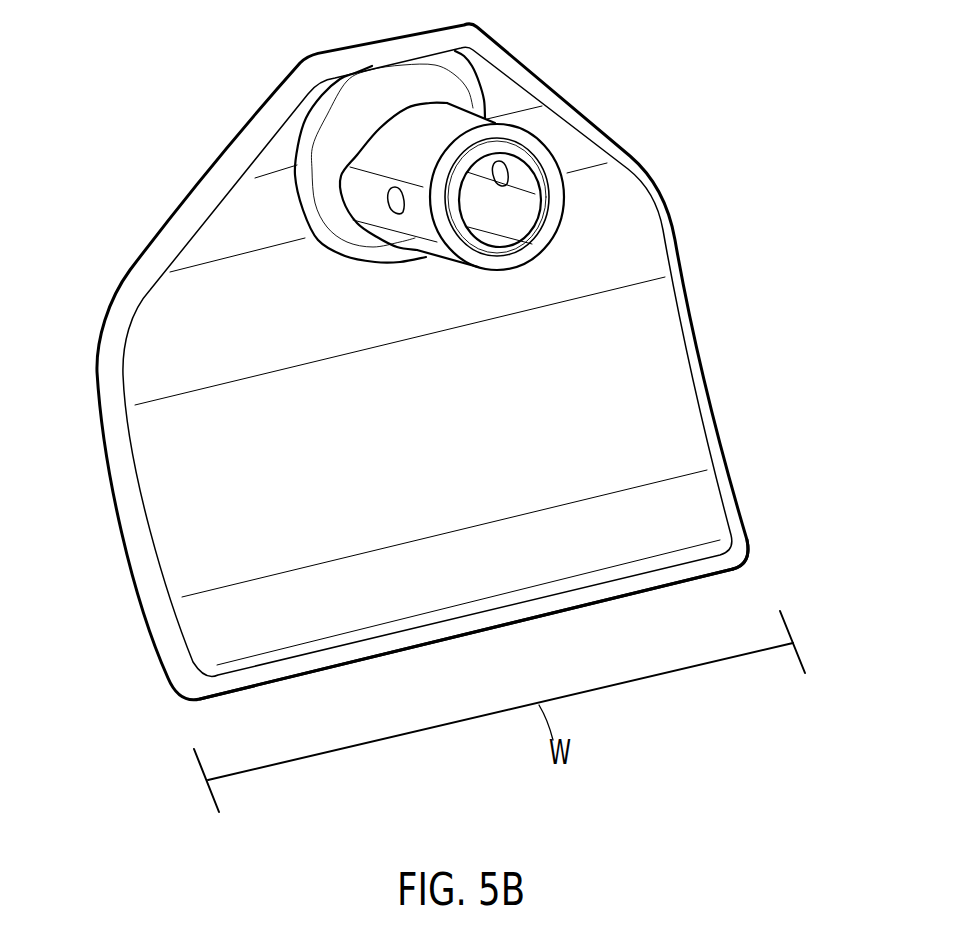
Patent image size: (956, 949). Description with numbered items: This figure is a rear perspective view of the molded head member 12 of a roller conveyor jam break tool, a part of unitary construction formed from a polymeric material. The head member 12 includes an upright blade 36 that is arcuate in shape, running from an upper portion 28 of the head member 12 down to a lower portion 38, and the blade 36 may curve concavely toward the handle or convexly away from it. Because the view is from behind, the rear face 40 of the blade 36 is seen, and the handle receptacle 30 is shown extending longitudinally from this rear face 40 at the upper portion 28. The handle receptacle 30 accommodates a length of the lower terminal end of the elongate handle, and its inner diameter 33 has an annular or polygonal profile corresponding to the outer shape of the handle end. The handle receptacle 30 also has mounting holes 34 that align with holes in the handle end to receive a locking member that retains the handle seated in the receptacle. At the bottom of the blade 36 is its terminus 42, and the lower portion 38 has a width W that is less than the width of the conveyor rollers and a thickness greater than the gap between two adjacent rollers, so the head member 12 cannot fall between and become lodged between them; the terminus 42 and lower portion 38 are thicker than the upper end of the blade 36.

The molded head member 12 is at (113, 629).
The upper portion 28 is at (195, 190).
The handle receptacle 30 is at (532, 140).
The inner diameter 33 is at (518, 215).
The mounting holes 34 is at (498, 186).
The upright blade 36 is at (673, 392).
The lower portion 38 is at (743, 518).
The rear face 40 is at (435, 441).
The terminus 42 is at (487, 630).